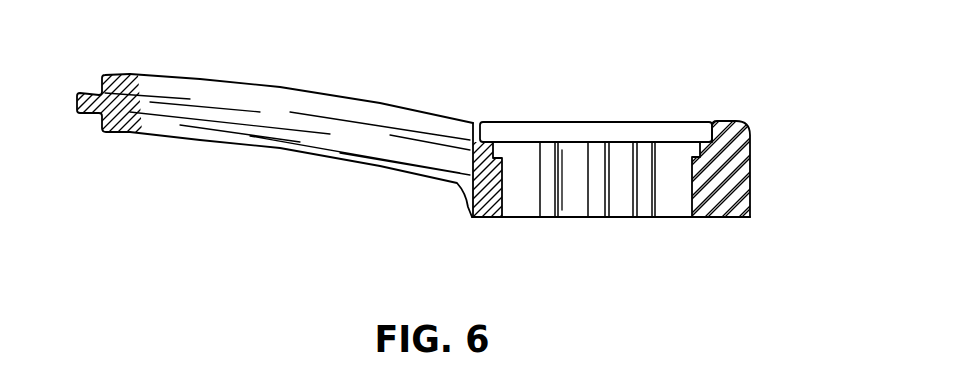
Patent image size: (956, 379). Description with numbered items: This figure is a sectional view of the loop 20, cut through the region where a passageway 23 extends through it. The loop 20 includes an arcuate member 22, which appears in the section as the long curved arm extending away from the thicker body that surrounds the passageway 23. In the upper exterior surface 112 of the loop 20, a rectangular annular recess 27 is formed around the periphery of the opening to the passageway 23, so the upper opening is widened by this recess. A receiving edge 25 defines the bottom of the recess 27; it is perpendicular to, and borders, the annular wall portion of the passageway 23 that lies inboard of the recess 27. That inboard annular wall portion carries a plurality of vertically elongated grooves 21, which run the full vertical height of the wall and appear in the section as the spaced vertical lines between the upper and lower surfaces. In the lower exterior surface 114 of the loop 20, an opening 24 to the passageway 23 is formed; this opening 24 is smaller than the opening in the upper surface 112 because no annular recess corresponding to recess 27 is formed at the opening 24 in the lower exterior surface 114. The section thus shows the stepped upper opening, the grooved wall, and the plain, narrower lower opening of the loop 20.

The loop 20 is at (738, 75).
The vertically elongated grooves 21 is at (548, 203).
The arcuate member 22 is at (231, 80).
The passageway 23 is at (672, 122).
The opening 24 is at (572, 200).
The receiving edge 25 is at (622, 122).
The rectangular annular recess 27 is at (528, 122).
The upper exterior surface 112 is at (727, 120).
The lower exterior surface 114 is at (715, 218).